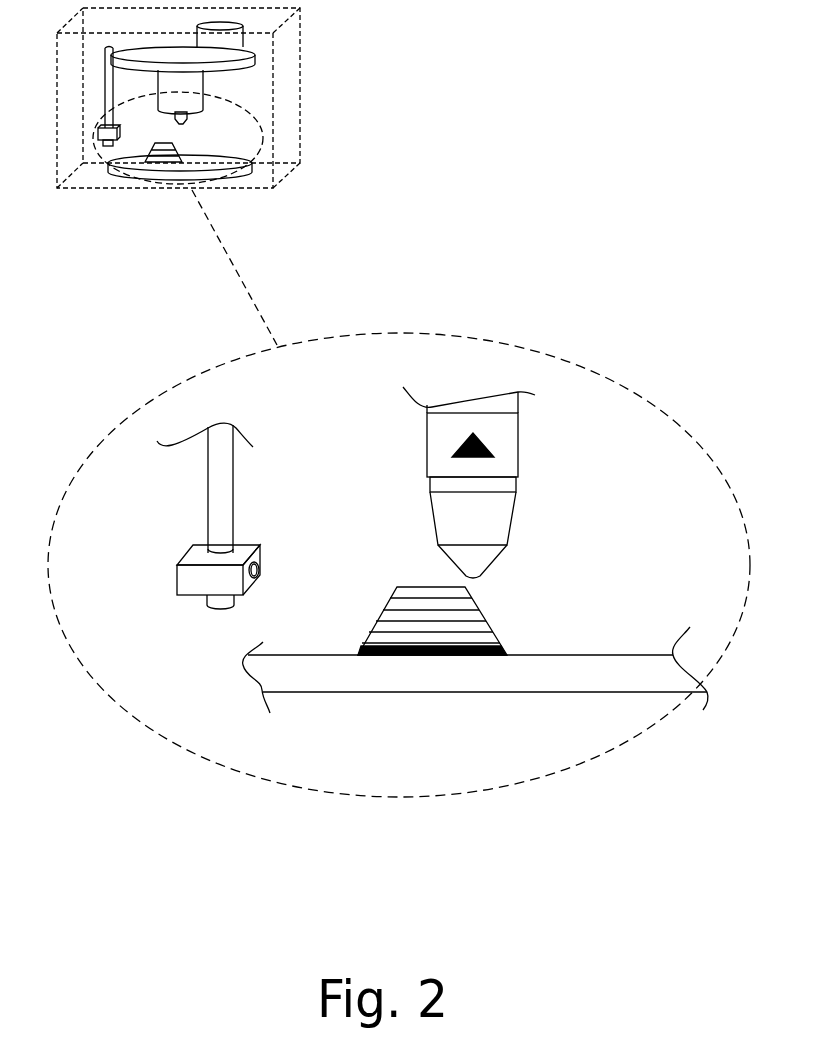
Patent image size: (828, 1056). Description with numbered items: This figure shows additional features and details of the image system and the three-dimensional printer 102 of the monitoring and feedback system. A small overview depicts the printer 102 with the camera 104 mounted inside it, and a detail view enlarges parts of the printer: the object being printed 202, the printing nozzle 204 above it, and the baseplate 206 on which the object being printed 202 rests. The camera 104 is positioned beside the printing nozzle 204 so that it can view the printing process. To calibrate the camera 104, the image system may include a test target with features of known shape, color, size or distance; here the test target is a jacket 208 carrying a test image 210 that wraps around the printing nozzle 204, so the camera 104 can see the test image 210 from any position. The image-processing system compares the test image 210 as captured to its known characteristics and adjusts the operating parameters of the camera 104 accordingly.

The 3D printer 102 is at (312, 57).
The camera 104 is at (177, 565).
The object being printed 202 is at (485, 618).
The printing nozzle 204 is at (500, 482).
The baseplate 206 is at (557, 692).
The jacket 208 is at (480, 432).
The test image 210 is at (457, 452).